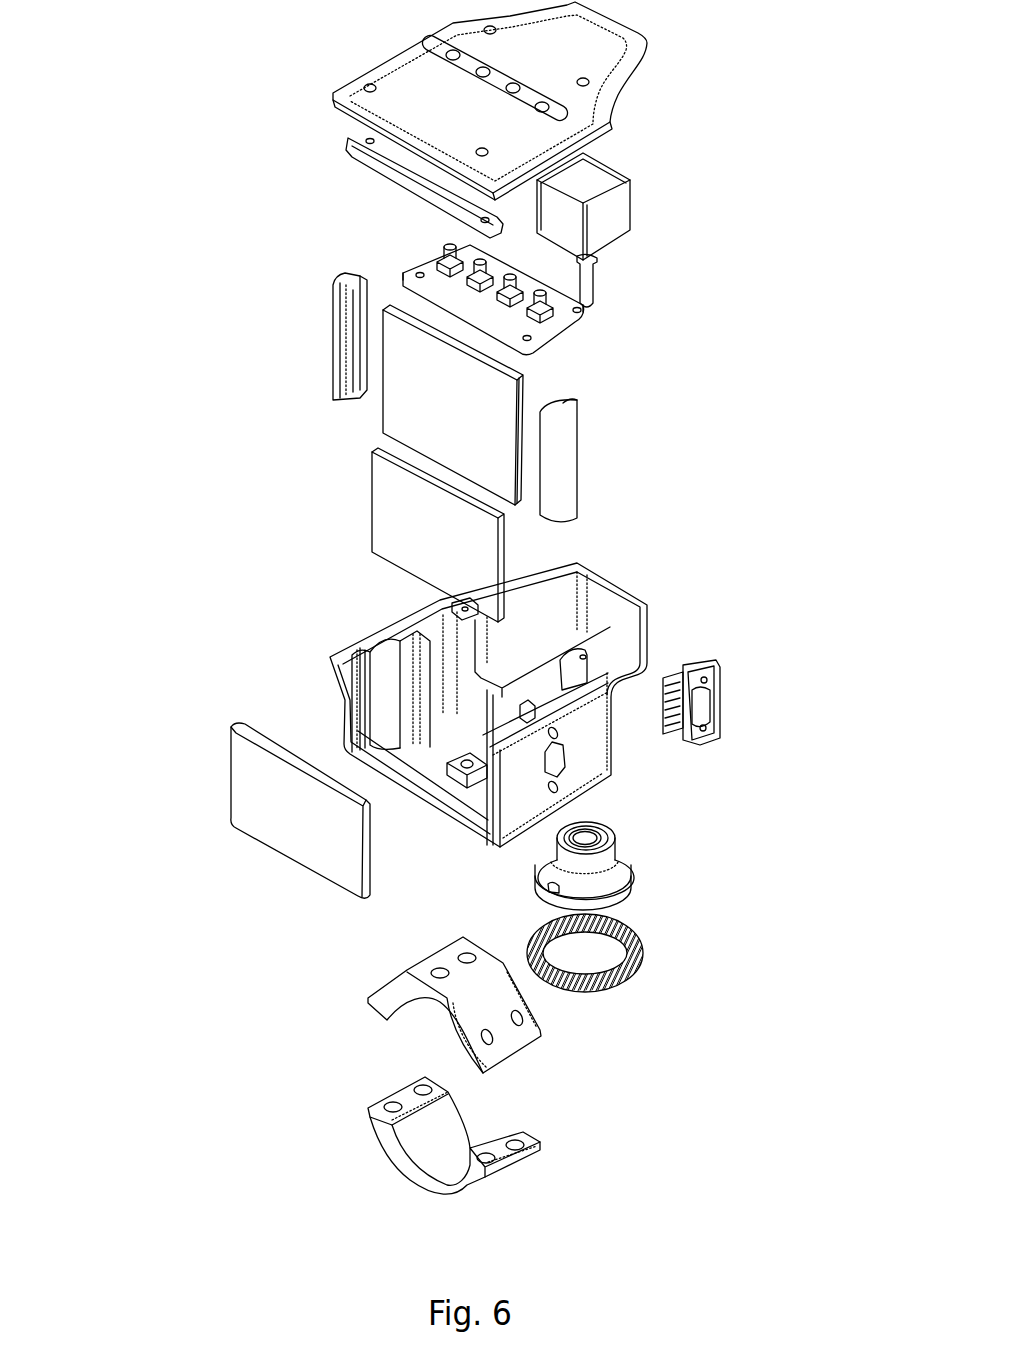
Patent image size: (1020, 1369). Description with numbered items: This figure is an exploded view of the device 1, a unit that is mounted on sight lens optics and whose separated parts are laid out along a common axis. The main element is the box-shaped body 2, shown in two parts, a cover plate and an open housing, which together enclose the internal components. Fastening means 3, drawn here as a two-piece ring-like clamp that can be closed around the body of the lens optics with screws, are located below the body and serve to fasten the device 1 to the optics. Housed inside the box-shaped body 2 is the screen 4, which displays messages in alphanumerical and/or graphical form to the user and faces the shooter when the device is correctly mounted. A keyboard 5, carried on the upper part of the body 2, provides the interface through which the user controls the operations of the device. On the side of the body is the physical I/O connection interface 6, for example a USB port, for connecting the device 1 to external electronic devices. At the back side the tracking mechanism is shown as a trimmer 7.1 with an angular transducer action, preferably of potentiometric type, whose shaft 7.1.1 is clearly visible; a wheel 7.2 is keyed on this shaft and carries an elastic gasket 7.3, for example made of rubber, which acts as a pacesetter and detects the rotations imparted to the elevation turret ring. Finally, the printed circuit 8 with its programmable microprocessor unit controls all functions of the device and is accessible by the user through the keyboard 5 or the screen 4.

The device 1 is at (190, 532).
The box-shaped body 2 is at (630, 53).
The fastening means 3 is at (387, 1053).
The screen 4 is at (267, 742).
The keyboard 5 is at (553, 332).
The physical I/O connection interface 6 is at (720, 677).
The trimmer 7.1 is at (625, 215).
The shaft 7.1.1 is at (587, 285).
The wheel 7.2 is at (628, 858).
The elastic gasket 7.3 is at (643, 955).
The printed circuit 8 is at (397, 417).